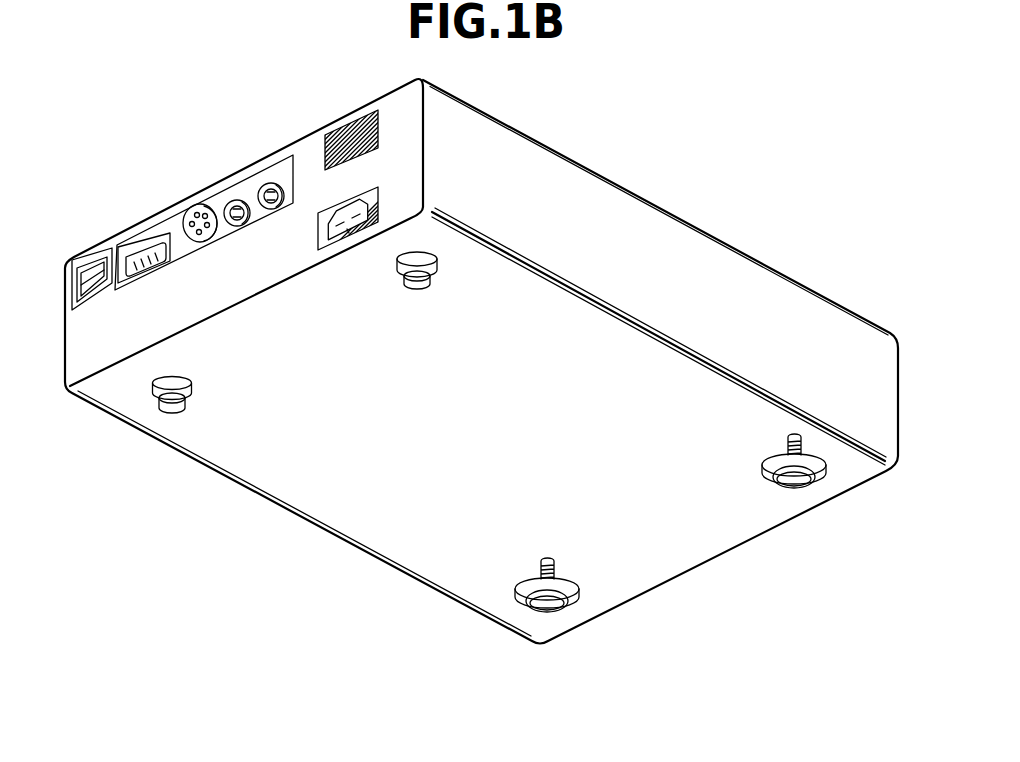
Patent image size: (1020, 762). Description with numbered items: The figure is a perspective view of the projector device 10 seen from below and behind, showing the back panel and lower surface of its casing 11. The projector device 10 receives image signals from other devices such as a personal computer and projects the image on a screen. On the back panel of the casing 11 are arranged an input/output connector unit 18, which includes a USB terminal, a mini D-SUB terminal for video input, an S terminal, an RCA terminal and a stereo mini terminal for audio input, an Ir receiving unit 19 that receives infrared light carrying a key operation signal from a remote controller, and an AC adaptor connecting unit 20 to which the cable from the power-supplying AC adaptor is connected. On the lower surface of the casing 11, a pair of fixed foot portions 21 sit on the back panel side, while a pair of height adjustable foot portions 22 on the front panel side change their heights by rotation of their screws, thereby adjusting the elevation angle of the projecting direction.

The projector device 10 is at (481, 361).
The casing 11 is at (740, 252).
The input/output connector unit 18 is at (177, 242).
The Ir receiving unit 19 is at (338, 147).
The AC adaptor connecting unit 20 is at (377, 201).
The fixed foot portions 21 is at (442, 278).
The height adjustable foot portions 22 is at (560, 613).